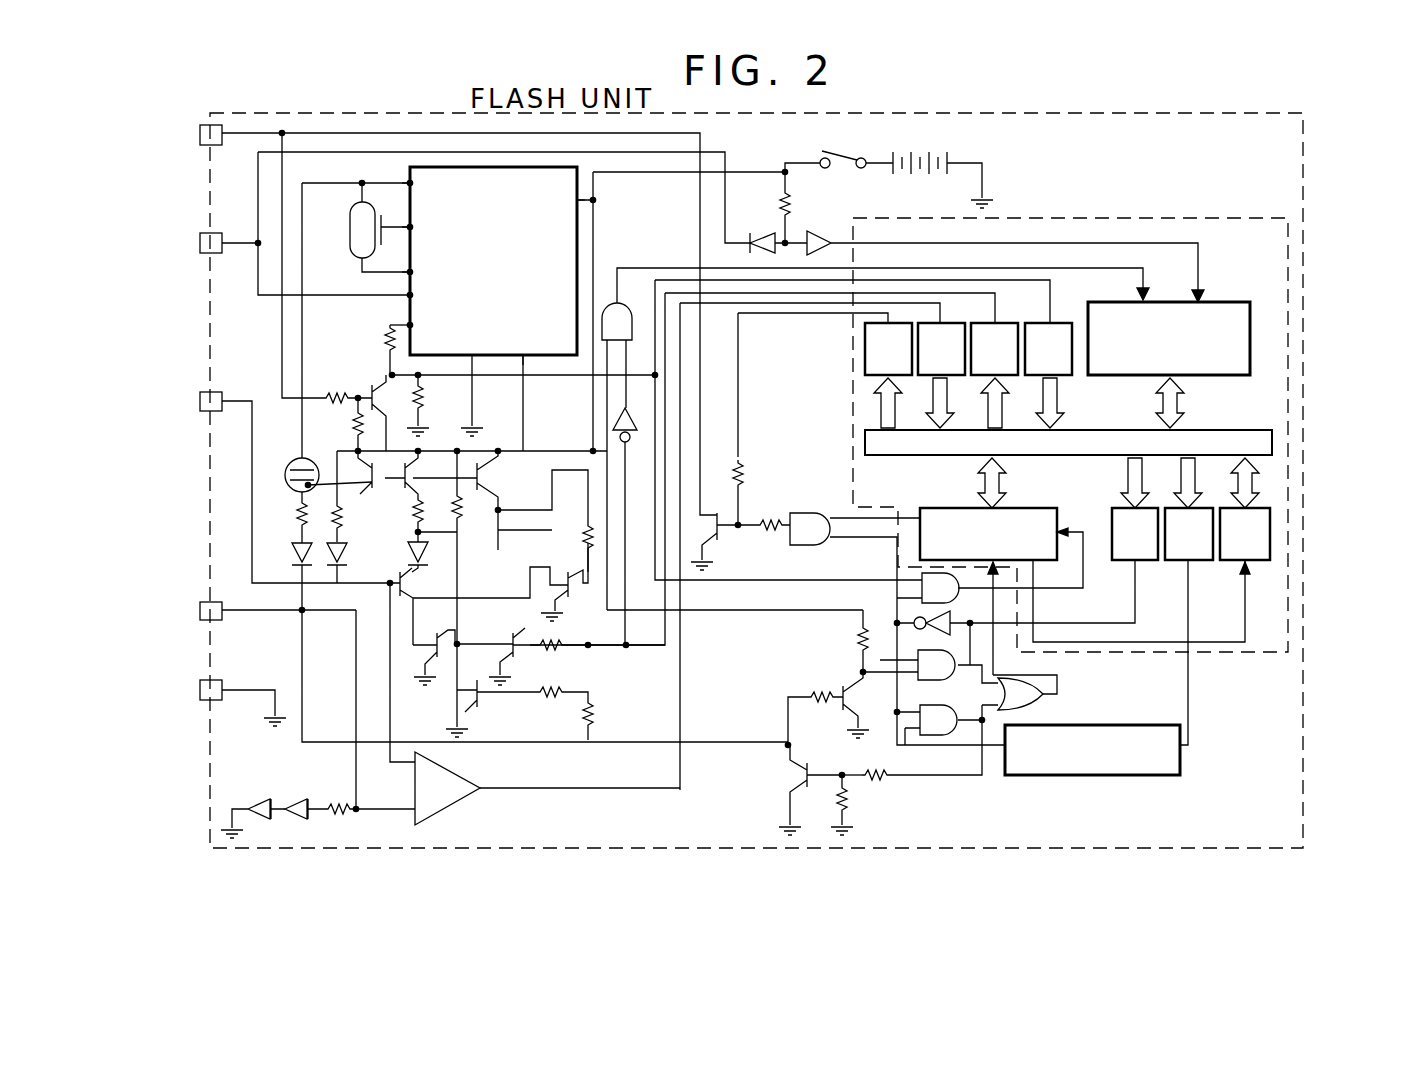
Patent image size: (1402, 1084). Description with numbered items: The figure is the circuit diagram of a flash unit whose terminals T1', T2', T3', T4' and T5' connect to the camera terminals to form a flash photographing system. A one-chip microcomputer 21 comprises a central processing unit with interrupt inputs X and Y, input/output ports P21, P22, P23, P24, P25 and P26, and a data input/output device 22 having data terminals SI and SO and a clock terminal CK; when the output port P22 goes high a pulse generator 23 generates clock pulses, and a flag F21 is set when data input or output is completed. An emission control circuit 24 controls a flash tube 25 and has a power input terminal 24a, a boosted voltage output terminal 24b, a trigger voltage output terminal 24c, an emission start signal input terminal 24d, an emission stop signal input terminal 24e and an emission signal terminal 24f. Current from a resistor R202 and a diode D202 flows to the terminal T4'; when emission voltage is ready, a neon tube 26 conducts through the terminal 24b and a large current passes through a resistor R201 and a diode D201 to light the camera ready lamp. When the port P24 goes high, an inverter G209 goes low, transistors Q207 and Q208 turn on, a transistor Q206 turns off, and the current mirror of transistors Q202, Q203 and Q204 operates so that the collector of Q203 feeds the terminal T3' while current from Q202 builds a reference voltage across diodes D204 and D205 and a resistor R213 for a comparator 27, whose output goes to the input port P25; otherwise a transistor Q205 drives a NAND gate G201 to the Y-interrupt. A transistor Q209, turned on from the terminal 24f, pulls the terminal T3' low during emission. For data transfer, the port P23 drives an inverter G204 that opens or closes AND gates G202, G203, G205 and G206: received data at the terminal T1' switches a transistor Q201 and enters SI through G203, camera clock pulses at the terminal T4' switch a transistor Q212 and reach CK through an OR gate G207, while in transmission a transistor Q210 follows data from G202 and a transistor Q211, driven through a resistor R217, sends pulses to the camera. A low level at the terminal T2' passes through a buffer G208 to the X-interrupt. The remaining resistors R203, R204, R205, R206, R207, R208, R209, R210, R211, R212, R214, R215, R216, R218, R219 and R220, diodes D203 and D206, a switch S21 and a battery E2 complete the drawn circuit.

The flash unit terminal T1' is at (185, 125).
The flash unit terminal T2' is at (189, 228).
The flash unit terminal T3' is at (186, 390).
The flash unit terminal T4' is at (229, 624).
The flash unit terminal T5' is at (228, 708).
The one-chip microcomputer 21 is at (1178, 216).
The data input/output device 22 is at (1042, 508).
The pulse generator 23 is at (1150, 725).
The emission control circuit 24 is at (410, 176).
The power input terminal 24a is at (556, 201).
The boosted voltage output terminal 24b is at (431, 186).
The trigger voltage output terminal 24c is at (430, 229).
The emission start signal input terminal 24d is at (431, 273).
The emission stop signal input terminal 24e is at (425, 326).
The emission signal output terminal 24f is at (523, 345).
The flash tube 25 is at (350, 226).
The neon tube 26 is at (290, 466).
The comparator 27 is at (458, 802).
The resistor R201 is at (297, 512).
The resistor R202 is at (330, 520).
The resistor R203 is at (358, 408).
The resistor R204 is at (318, 395).
The resistor R205 is at (388, 338).
The resistor R206 is at (416, 385).
The resistor R207 is at (414, 503).
The resistor R208 is at (463, 512).
The resistor R209 is at (560, 650).
The resistor R210 is at (596, 545).
The resistor R211 is at (565, 695).
The resistor R212 is at (592, 722).
The resistor R213 is at (340, 815).
The resistor R214 is at (745, 460).
The resistor R215 is at (765, 512).
The resistor R216 is at (861, 640).
The resistor R217 is at (882, 790).
The resistor R218 is at (850, 803).
The resistor R219 is at (826, 680).
The resistor R220 is at (790, 206).
The transistor Q201 is at (370, 415).
The transistor Q202 is at (365, 495).
The transistor Q203 is at (398, 497).
The transistor Q204 is at (532, 500).
The transistor Q205 is at (398, 590).
The transistor Q206 is at (435, 640).
The transistor Q207 is at (505, 708).
The transistor Q208 is at (510, 640).
The transistor Q209 is at (572, 600).
The transistor Q210 is at (742, 547).
The transistor Q211 is at (800, 775).
The transistor Q212 is at (832, 705).
The diode D201 is at (292, 553).
The diode D202 is at (327, 553).
The diode D203 is at (410, 552).
The diode D204 is at (258, 805).
The diode D205 is at (296, 801).
The diode D206 is at (757, 242).
The NAND gate G201 is at (609, 303).
The AND gate G202 is at (816, 522).
The AND gate G203 is at (920, 580).
The inverter G204 is at (932, 618).
The AND gate G205 is at (916, 668).
The AND gate G206 is at (940, 728).
The OR gate G207 is at (1025, 690).
The buffer G208 is at (822, 242).
The inverter G209 is at (680, 398).
The switch S21 is at (823, 157).
The battery E2 is at (922, 157).
The input/output port P21 is at (888, 349).
The output port P22 is at (1189, 534).
The output port P23 is at (1135, 534).
The output port P24 is at (994, 349).
The input port P25 is at (941, 349).
The input/output port P26 is at (1048, 349).
The flag F21 is at (1245, 534).